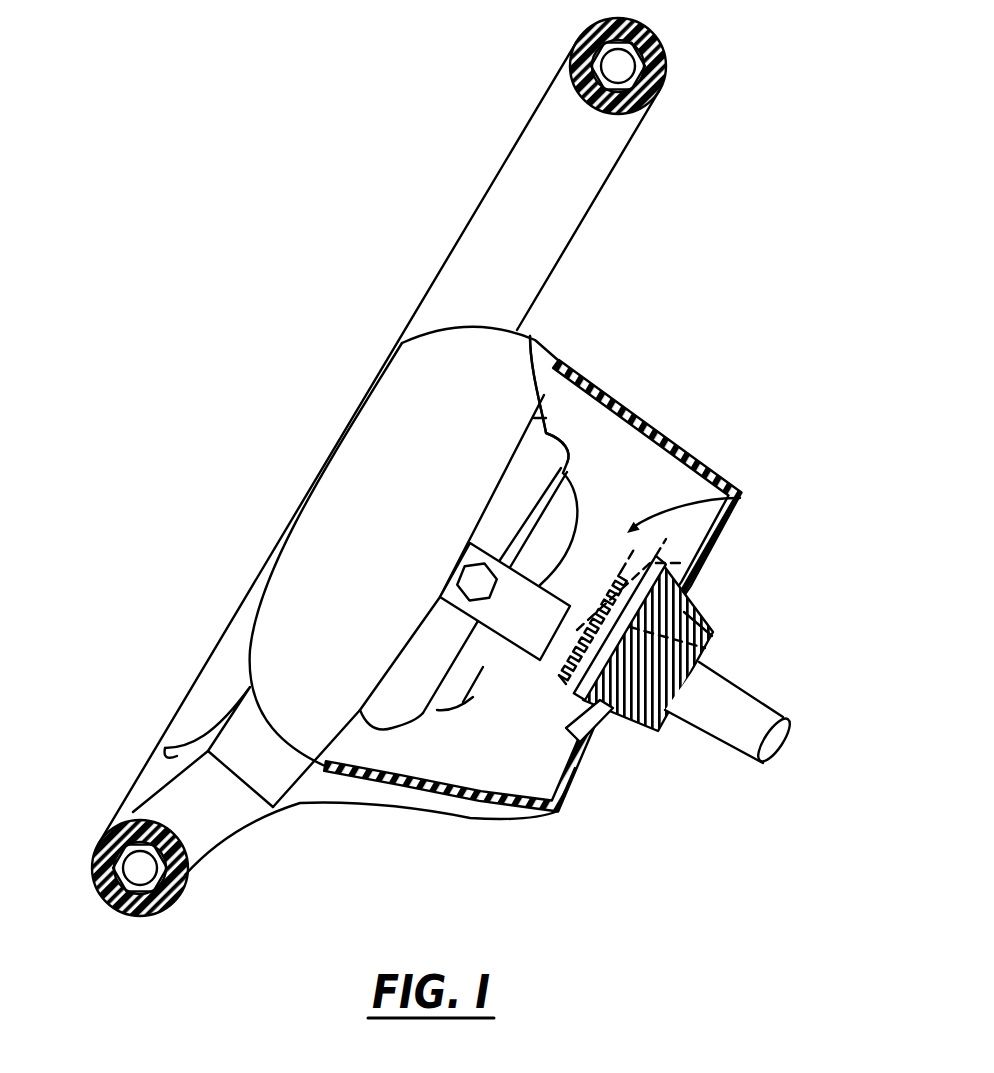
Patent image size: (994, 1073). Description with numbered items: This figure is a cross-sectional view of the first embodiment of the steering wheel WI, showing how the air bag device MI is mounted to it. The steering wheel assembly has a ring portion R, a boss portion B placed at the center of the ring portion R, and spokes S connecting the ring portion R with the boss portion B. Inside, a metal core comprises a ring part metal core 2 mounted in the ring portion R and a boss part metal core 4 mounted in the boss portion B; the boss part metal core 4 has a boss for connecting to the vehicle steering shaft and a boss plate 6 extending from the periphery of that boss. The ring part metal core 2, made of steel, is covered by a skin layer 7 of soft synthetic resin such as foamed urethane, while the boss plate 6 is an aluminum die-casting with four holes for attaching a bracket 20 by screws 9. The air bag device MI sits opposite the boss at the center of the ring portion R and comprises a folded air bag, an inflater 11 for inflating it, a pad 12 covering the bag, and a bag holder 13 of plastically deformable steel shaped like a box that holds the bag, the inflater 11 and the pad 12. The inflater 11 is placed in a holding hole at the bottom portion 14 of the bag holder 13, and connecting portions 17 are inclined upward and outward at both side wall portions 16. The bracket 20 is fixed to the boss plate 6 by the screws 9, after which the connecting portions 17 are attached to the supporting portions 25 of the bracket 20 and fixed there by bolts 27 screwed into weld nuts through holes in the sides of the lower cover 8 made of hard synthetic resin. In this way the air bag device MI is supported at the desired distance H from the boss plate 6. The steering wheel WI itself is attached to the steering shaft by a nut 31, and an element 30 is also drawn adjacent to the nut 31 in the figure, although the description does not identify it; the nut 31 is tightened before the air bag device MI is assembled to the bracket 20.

The ring part metal core 2 is at (637, 26).
The boss part metal core 4 is at (690, 604).
The boss plate 6 is at (583, 758).
The skin layer 7 is at (174, 893).
The lower cover 8 is at (702, 440).
The screws 9 is at (678, 565).
The inflater 11 is at (568, 503).
The pad 12 is at (410, 357).
The bag holder 13 is at (532, 352).
The bottom portion 14 is at (567, 462).
The side wall portions 16 is at (549, 399).
The connecting portions 17 is at (445, 610).
The bracket 20 is at (742, 494).
The supporting portions 25 is at (500, 567).
The bolts 27 is at (472, 570).
The rod 30 is at (743, 700).
The nut 31 is at (712, 638).
The steering wheel WI is at (345, 155).
The ring portion R is at (548, 112).
The air bag device MI is at (575, 407).
The distance H is at (527, 663).
The boss portion B is at (652, 795).
The spoke S is at (212, 820).